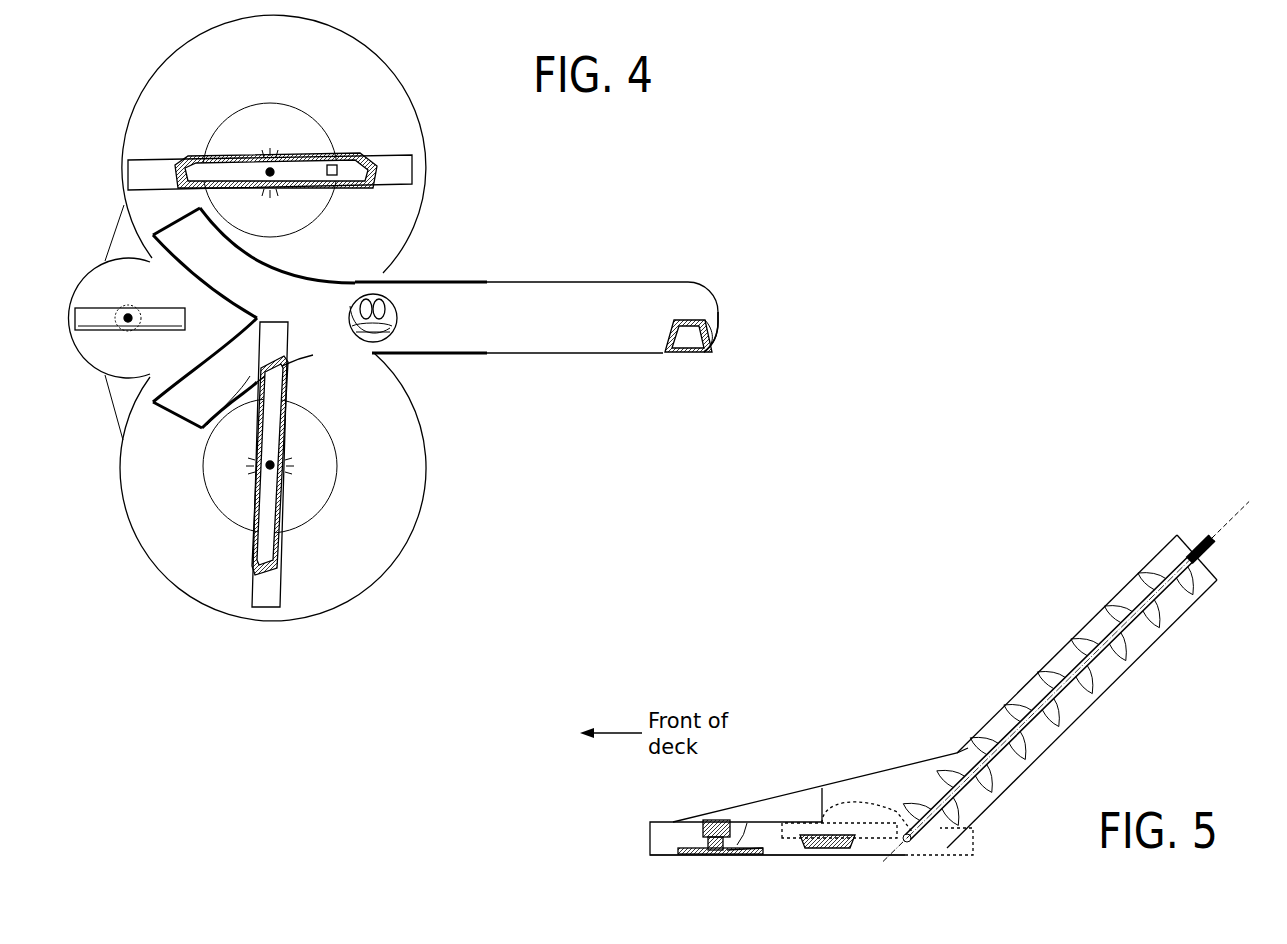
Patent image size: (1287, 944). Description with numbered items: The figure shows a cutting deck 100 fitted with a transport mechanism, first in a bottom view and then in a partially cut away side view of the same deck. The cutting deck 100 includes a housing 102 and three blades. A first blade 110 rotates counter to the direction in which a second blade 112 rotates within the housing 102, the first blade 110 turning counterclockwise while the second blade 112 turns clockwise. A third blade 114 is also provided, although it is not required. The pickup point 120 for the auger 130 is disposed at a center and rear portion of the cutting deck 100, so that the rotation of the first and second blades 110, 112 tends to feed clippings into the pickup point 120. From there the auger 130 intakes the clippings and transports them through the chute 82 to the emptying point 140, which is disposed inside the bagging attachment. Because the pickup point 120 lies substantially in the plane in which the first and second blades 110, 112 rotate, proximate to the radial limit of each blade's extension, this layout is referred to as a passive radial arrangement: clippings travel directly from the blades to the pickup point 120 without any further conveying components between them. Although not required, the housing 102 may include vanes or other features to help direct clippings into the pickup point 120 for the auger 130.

In FIG. 4, the chute 82 is at (567, 302).
In FIG. 5, the chute 82 is at (1052, 658).
In FIG. 4, the cutting deck 100 is at (442, 525).
In FIG. 5, the cutting deck 100 is at (780, 787).
In FIG. 4, the housing 102 is at (190, 598).
In FIG. 5, the housing 102 is at (673, 820).
In FIG. 4, the first blade 110 is at (377, 167).
In FIG. 4, the second blade 112 is at (262, 517).
In FIG. 5, the second blade 112 is at (812, 838).
In FIG. 4, the third blade 114 is at (155, 322).
In FIG. 5, the third blade 114 is at (682, 851).
In FIG. 4, the pickup point 120 is at (351, 284).
In FIG. 5, the pickup point 120 is at (900, 850).
In FIG. 4, the auger 130 is at (686, 330).
In FIG. 5, the auger 130 is at (1127, 608).
In FIG. 4, the emptying point 140 is at (712, 357).
In FIG. 5, the emptying point 140 is at (1197, 610).